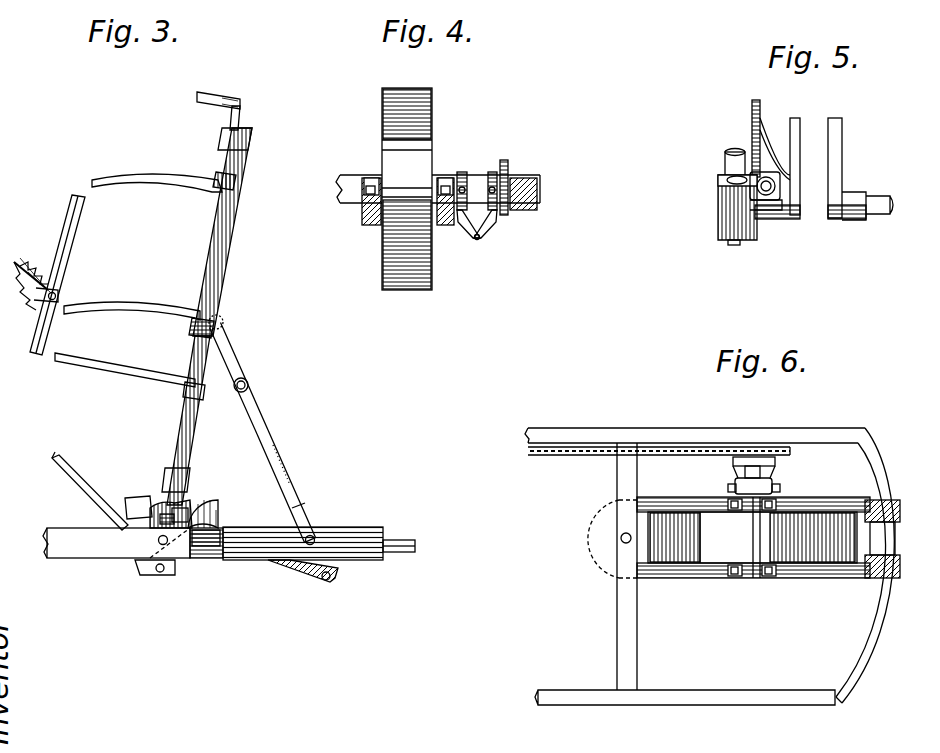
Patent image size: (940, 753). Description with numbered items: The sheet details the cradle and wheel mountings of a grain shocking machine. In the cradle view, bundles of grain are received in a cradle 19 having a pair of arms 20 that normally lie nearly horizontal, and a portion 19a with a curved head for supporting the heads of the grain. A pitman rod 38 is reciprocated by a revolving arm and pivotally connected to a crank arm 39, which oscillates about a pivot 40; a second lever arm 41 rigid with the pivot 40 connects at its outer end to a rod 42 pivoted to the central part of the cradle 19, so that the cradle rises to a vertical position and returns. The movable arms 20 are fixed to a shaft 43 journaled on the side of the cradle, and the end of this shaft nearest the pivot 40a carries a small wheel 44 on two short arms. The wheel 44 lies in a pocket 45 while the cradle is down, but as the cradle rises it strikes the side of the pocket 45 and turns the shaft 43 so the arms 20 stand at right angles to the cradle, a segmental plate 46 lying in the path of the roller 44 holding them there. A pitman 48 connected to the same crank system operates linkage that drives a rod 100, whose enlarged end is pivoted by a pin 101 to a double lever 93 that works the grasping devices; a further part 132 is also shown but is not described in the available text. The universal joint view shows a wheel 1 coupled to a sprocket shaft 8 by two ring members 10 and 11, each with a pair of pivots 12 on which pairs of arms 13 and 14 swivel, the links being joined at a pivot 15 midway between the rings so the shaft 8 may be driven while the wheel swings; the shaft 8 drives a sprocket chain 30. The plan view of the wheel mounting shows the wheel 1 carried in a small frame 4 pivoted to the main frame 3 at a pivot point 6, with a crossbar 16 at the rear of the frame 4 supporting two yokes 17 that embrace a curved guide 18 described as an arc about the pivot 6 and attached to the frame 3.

In FIG. 4, the wheel 1 is at (433, 132).
In FIG. 6, the wheel 1 is at (796, 560).
In FIG. 6, the frame 3 is at (708, 690).
In FIG. 4, the small frame 4 is at (366, 224).
In FIG. 6, the small frame 4 is at (824, 577).
In FIG. 6, the pivot point 6 is at (621, 540).
In FIG. 6, the sprocket shaft 8 is at (762, 445).
In FIG. 4, the ring member 10 is at (462, 171).
In FIG. 6, the ring member 10 is at (773, 483).
In FIG. 4, the ring member 11 is at (492, 170).
In FIG. 6, the ring member 11 is at (733, 462).
In FIG. 4, the pivots 12 is at (477, 189).
In FIG. 4, the arms 13 is at (466, 222).
In FIG. 6, the arms 13 is at (728, 489).
In FIG. 4, the arms 14 is at (490, 226).
In FIG. 6, the arms 14 is at (776, 461).
In FIG. 4, the pivot 15 is at (478, 240).
In FIG. 6, the crossbar 16 is at (880, 578).
In FIG. 6, the links or yokes 17 is at (890, 555).
In FIG. 6, the curved guide 18 is at (880, 478).
In FIG. 3, the cradle 19 is at (246, 162).
In FIG. 3, the portion of cradle 19a is at (222, 98).
In FIG. 3, the arms 20 is at (158, 182).
In FIG. 6, the sprocket chain 30 is at (659, 462).
In FIG. 3, the pitman rod 38 is at (405, 552).
In FIG. 3, the crank arm 39 is at (345, 526).
In FIG. 3, the pivot 40 is at (313, 534).
In FIG. 3, the pivot 40a is at (156, 566).
In FIG. 3, the lever arm 41 is at (284, 463).
In FIG. 3, the rod 42 is at (232, 355).
In FIG. 3, the shaft 43 is at (160, 439).
In FIG. 5, the shaft 43 is at (727, 152).
In FIG. 3, the small wheel 44 is at (184, 508).
In FIG. 5, the small wheel 44 is at (770, 182).
In FIG. 3, the pocket 45 is at (208, 546).
In FIG. 5, the pocket 45 is at (774, 208).
In FIG. 3, the segmental plate 46 is at (210, 518).
In FIG. 5, the segmental plate 46 is at (760, 115).
In FIG. 3, the pitman 48 is at (300, 566).
In FIG. 3, the double lever 93 is at (72, 250).
In FIG. 3, the rod 100 is at (22, 262).
In FIG. 3, the pin 101 is at (57, 293).
In FIG. 3, the lever 132 is at (78, 488).